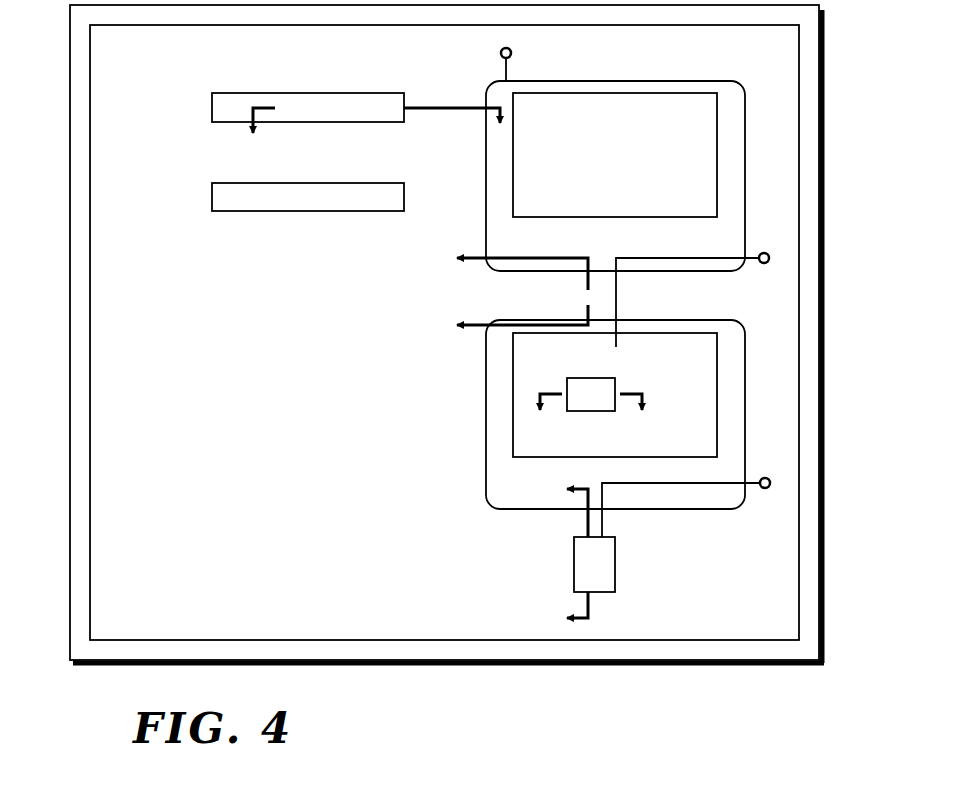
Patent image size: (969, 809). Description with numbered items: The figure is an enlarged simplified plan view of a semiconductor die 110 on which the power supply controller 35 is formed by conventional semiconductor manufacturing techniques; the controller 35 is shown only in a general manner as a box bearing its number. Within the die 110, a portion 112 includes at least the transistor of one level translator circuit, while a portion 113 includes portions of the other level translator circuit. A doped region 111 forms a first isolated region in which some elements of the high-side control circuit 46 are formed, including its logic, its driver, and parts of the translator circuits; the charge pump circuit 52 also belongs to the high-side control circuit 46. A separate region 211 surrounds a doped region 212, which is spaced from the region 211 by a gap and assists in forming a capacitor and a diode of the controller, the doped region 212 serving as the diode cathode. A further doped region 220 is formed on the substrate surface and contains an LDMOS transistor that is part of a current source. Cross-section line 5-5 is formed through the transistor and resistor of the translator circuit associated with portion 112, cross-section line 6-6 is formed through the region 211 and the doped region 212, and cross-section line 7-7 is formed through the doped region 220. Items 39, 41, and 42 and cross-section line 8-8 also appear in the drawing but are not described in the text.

The semiconductor die 110 is at (826, 626).
The controller 35 is at (90, 332).
The portion 112 is at (298, 93).
The portion 113 is at (298, 211).
The connection terminal 39 is at (512, 53).
The doped region 111 is at (492, 213).
The high-side control circuit 46 is at (642, 95).
The connection terminal 42 is at (765, 253).
The region 211 is at (493, 482).
The charge pump circuit 52 is at (668, 333).
The doped region 212 is at (617, 382).
The connection terminal 41 is at (766, 478).
The doped region 220 is at (617, 565).
The cross-section line 5- 5 is at (372, 143).
The cross-section line 6- 6 is at (588, 424).
The cross-section line 7- 7 is at (560, 554).
The section line FIG. 8 is at (505, 292).